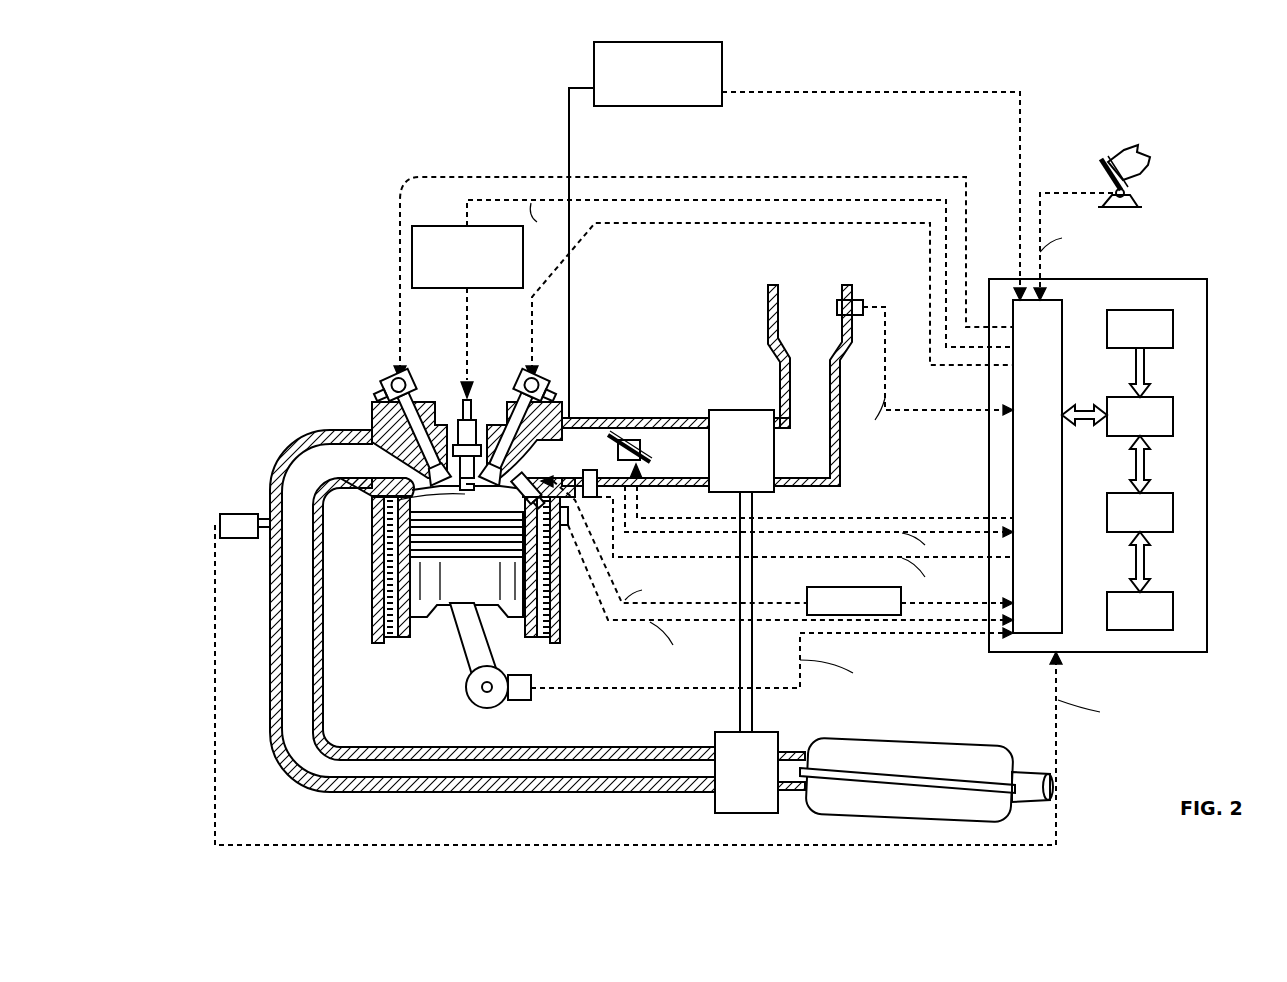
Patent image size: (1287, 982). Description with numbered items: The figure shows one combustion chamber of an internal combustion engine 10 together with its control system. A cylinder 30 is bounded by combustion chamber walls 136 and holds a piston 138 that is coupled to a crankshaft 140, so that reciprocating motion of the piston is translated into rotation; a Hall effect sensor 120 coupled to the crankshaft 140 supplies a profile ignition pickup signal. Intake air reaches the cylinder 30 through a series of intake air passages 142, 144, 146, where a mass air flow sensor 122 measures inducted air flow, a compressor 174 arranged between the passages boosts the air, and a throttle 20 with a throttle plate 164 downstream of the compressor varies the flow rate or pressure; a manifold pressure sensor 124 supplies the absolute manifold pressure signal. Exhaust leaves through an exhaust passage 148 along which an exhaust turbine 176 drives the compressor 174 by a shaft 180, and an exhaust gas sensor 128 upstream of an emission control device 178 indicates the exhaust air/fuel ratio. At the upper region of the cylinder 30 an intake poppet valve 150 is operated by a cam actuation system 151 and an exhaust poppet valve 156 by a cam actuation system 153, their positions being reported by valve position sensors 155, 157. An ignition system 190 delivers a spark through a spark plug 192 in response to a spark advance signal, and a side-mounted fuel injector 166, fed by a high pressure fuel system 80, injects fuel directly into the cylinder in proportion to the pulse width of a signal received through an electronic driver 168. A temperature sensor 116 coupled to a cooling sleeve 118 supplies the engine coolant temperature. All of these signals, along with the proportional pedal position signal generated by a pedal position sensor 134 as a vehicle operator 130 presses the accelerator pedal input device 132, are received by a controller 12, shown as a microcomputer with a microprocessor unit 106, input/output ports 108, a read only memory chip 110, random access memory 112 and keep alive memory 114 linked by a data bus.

The engine 10 is at (206, 116).
The controller 12 is at (1207, 283).
The throttle 20 is at (632, 435).
The cylinder 30 is at (383, 512).
The fuel system 80 is at (722, 52).
The microprocessor unit 106 is at (1173, 412).
The input/output ports 108 is at (1062, 305).
The read only memory chip 110 is at (1173, 325).
The random access memory 112 is at (1173, 510).
The keep alive memory 114 is at (1173, 608).
The temperature sensor 116 is at (563, 527).
The cooling sleeve 118 is at (543, 593).
The Hall effect sensor 120 is at (518, 698).
The mass air flow sensor 122 is at (858, 300).
The manifold pressure sensor 124 is at (600, 502).
The exhaust gas sensor 128 is at (220, 516).
The vehicle operator 130 is at (1150, 160).
The input device 132 is at (1100, 163).
The pedal position sensor 134 is at (1140, 200).
The combustion chamber walls 136 is at (407, 640).
The piston 138 is at (452, 590).
The crankshaft 140 is at (482, 700).
The intake air passage 142 is at (826, 333).
The intake air passage 144 is at (696, 463).
The intake air passage 146 is at (606, 463).
The exhaust passage 148 is at (356, 471).
The intake poppet valve 150 is at (500, 475).
The cam actuation system 151 is at (520, 377).
The cam actuation system 153 is at (397, 373).
The valve position sensor 155 is at (545, 395).
The exhaust poppet valve 156 is at (392, 445).
The valve position sensor 157 is at (390, 395).
The throttle plate 164 is at (591, 468).
The fuel injector 166 is at (543, 474).
The electronic driver 168 is at (806, 590).
The compressor 174 is at (728, 410).
The exhaust turbine 176 is at (715, 800).
The emission control device 178 is at (972, 748).
The shaft 180 is at (752, 705).
The ignition system 190 is at (428, 226).
The spark plug 192 is at (460, 437).